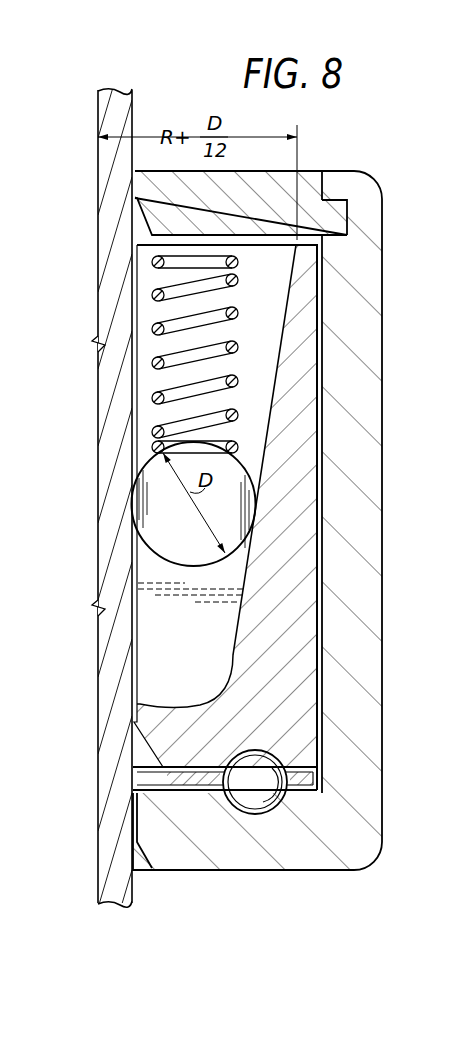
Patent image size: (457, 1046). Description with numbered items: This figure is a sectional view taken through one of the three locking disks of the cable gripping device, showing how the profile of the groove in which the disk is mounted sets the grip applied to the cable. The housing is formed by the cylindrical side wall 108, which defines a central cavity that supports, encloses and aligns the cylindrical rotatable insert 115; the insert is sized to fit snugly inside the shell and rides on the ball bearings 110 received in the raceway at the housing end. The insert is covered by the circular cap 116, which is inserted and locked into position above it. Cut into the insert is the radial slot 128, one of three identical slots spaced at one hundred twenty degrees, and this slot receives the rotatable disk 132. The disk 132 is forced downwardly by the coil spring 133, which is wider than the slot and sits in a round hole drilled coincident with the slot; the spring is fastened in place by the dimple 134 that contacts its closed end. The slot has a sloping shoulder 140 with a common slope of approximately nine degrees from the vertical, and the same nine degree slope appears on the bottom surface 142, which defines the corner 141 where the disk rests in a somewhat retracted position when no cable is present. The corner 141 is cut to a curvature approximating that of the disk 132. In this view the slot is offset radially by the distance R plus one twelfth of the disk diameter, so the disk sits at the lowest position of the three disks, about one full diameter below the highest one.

The cylindrical side wall 108 is at (365, 394).
The ball bearings 110 is at (268, 758).
The rotatable insert 115 is at (293, 697).
The circular cap 116 is at (310, 175).
The radial slot 128 is at (245, 560).
The rotatable disk 132 is at (247, 490).
The coil spring 133 is at (237, 310).
The dimple 134 is at (180, 248).
The sloping shoulder 140 is at (237, 622).
The corner 141 is at (212, 693).
The bottom surface 142 is at (153, 706).